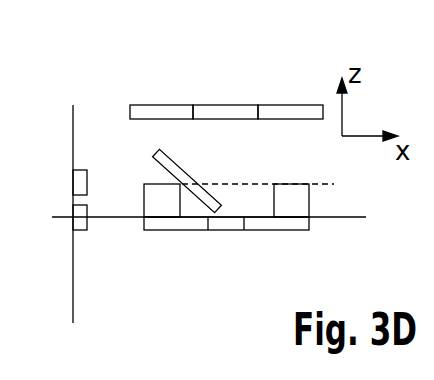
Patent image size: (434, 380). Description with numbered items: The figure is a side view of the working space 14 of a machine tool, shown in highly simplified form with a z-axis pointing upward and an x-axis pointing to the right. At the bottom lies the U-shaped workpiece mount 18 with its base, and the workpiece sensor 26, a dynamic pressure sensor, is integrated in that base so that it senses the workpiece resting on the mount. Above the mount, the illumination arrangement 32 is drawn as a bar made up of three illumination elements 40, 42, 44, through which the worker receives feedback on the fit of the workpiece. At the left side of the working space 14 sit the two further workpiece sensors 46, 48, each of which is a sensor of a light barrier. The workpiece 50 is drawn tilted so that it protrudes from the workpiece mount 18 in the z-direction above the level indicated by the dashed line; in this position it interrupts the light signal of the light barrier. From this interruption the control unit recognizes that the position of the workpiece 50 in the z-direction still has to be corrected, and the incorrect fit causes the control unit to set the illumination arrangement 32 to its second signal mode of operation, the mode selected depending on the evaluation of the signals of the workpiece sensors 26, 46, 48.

The working space 14 is at (92, 87).
The workpiece mount 18 is at (160, 207).
The workpiece sensor 26 is at (217, 222).
The illumination arrangement 32 is at (128, 109).
The illumination element 40 is at (167, 112).
The illumination element 42 is at (225, 112).
The illumination element 44 is at (292, 112).
The workpiece sensor 46 is at (80, 183).
The workpiece sensor 48 is at (78, 223).
The workpiece 50 is at (170, 172).